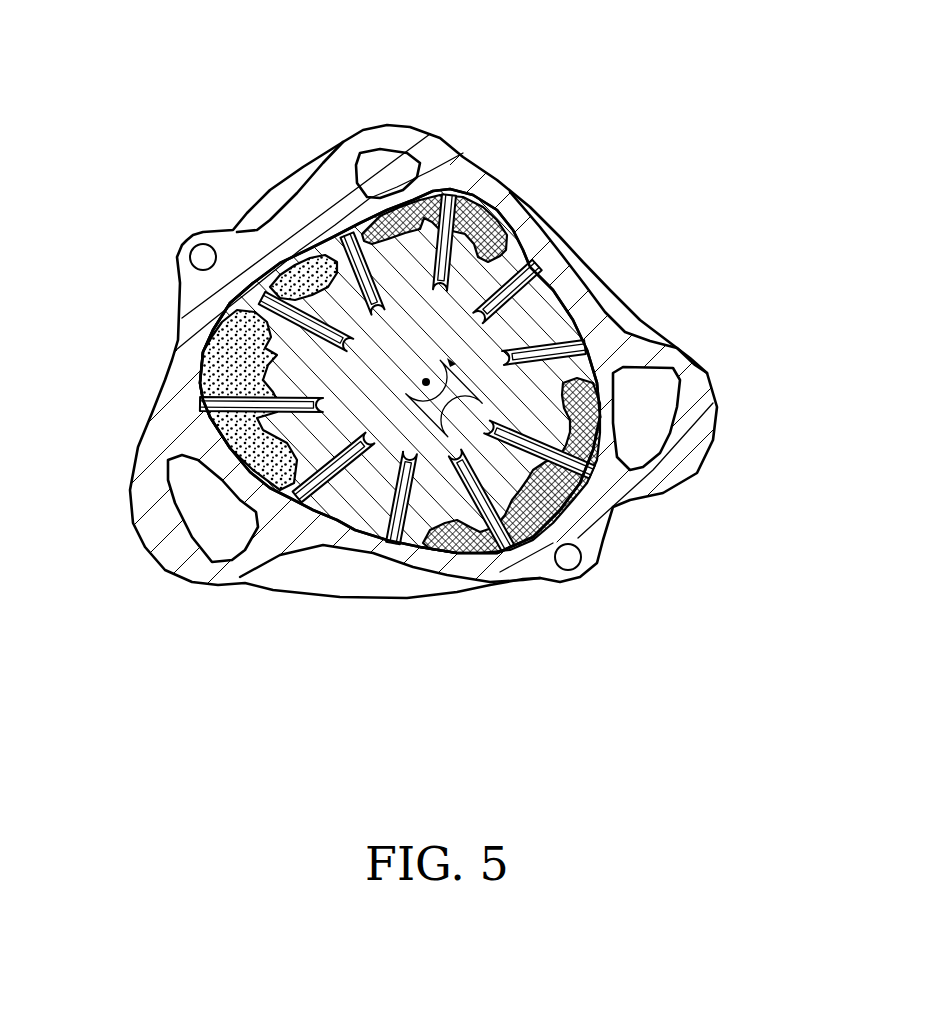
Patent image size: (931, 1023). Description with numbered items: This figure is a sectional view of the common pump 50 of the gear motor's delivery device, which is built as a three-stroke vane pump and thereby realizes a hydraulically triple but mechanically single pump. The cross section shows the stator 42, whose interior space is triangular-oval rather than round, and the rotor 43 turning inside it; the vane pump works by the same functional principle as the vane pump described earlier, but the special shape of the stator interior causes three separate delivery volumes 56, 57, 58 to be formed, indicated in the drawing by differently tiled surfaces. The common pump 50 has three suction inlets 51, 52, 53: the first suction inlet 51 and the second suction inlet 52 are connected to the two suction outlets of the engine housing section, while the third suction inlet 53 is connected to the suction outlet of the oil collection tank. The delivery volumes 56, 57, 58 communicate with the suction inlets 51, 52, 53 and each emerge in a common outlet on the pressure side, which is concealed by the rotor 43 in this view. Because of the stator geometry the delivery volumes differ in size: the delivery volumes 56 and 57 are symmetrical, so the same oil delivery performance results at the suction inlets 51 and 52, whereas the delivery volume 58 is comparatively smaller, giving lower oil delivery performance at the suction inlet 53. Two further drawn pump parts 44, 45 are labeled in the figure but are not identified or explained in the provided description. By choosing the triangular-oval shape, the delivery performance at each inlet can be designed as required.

The common pump 50 is at (655, 213).
The stator 42 is at (465, 190).
The rotor 43 is at (280, 350).
The radial vanes 44 is at (505, 428).
The cross-hatched insert region 45 is at (592, 488).
The first suction inlet 51 is at (647, 415).
The second suction inlet 52 is at (213, 507).
The third suction inlet 53 is at (377, 173).
The delivery volume 56 is at (556, 545).
The delivery volume 57 is at (203, 365).
The delivery volume 58 is at (518, 236).